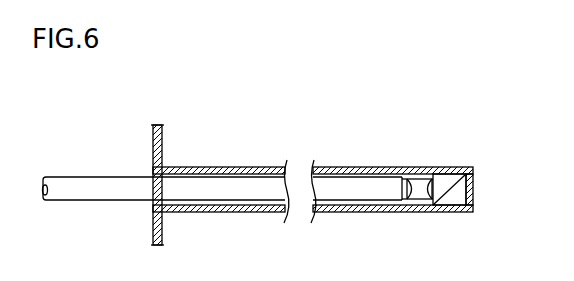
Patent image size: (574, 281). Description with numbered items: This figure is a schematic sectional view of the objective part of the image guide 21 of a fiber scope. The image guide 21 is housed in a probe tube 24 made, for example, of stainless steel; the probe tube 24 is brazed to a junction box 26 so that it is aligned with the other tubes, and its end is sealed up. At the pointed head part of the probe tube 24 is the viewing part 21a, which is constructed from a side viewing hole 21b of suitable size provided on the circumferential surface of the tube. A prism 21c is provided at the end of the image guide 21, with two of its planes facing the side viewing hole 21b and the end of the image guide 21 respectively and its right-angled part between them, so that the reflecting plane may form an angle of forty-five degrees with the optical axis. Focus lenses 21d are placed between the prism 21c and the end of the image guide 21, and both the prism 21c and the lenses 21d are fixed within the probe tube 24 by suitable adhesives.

The junction box 26 is at (163, 135).
The probe tube 24 is at (205, 167).
The image guide 21 is at (248, 188).
The viewing part 21a is at (427, 153).
The side viewing hole 21b is at (441, 170).
The prism 21c is at (441, 188).
The focus lenses 21d is at (420, 203).